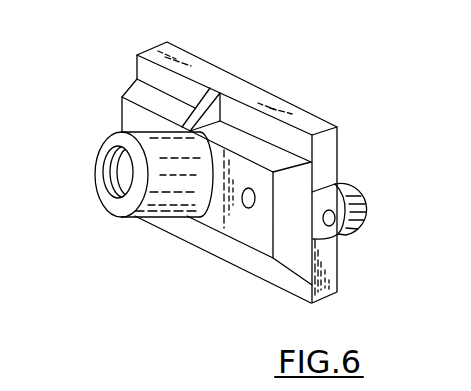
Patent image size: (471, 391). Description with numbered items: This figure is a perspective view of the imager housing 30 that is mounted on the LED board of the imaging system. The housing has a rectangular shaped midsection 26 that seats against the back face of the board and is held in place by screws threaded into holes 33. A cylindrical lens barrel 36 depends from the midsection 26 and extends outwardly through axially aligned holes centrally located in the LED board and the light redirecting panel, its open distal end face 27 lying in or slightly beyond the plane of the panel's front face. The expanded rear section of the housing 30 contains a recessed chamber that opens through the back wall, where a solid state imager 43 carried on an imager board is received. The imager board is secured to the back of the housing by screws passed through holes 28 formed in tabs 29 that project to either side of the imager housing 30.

The imager housing 30 is at (308, 71).
The rectangular shaped midsection 26 is at (255, 240).
The bore opening 27 is at (98, 147).
The holes 28 is at (336, 209).
The tabs 29 is at (367, 220).
The holes 33 is at (243, 199).
The cylindrical lens barrel 36 is at (144, 215).
The solid state imager 43 is at (333, 151).